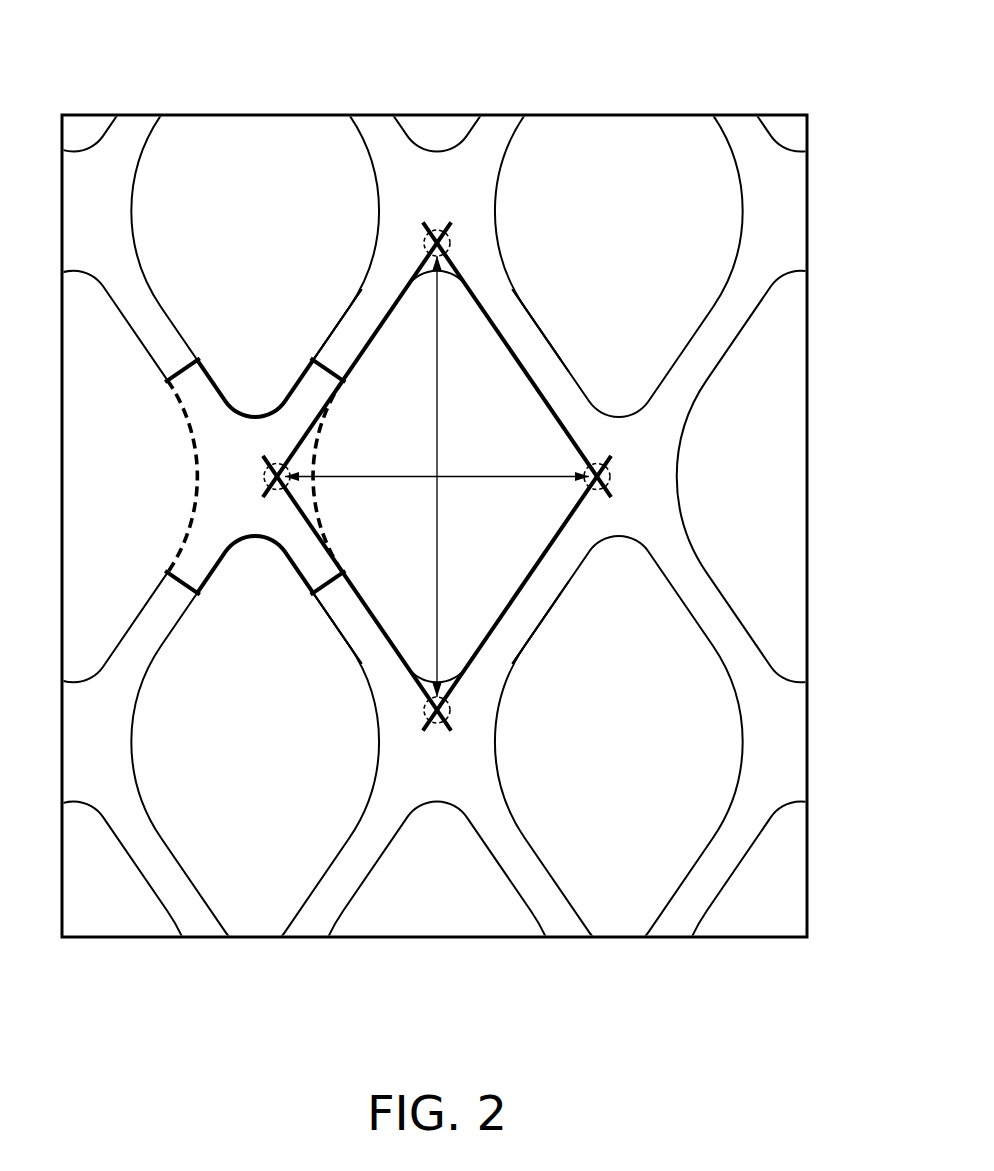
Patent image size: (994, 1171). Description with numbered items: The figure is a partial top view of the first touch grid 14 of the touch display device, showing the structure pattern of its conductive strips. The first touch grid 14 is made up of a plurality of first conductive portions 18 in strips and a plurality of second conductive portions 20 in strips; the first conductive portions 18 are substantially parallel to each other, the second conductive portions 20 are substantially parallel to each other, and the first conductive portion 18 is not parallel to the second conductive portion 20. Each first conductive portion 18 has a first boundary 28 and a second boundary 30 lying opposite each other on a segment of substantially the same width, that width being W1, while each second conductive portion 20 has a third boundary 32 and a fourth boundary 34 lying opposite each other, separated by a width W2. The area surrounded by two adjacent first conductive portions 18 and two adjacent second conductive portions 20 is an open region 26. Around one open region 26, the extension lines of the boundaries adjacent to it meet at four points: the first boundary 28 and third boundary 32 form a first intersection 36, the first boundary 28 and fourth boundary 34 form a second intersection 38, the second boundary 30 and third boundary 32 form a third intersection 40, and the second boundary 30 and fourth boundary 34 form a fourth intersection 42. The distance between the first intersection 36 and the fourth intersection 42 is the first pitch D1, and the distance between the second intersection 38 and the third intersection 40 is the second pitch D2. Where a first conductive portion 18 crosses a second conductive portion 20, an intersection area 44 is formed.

The first touch grid 14 is at (708, 39).
The first conductive portion 18 is at (370, 290).
The second conductive portion 20 is at (504, 290).
The open region 26 is at (271, 197).
The first boundary 28 is at (376, 340).
The second boundary 30 is at (320, 349).
The third boundary 32 is at (556, 348).
The fourth boundary 34 is at (498, 340).
The first intersection 36 is at (264, 476).
The second intersection 38 is at (436, 229).
The third intersection 40 is at (437, 724).
The fourth intersection 42 is at (610, 476).
The intersection area 44 is at (196, 476).
The width of the first conductive portion W1 is at (417, 347).
The width of the second conductive portion W2 is at (457, 347).
The first pitch D1 is at (437, 461).
The second pitch D2 is at (459, 476).